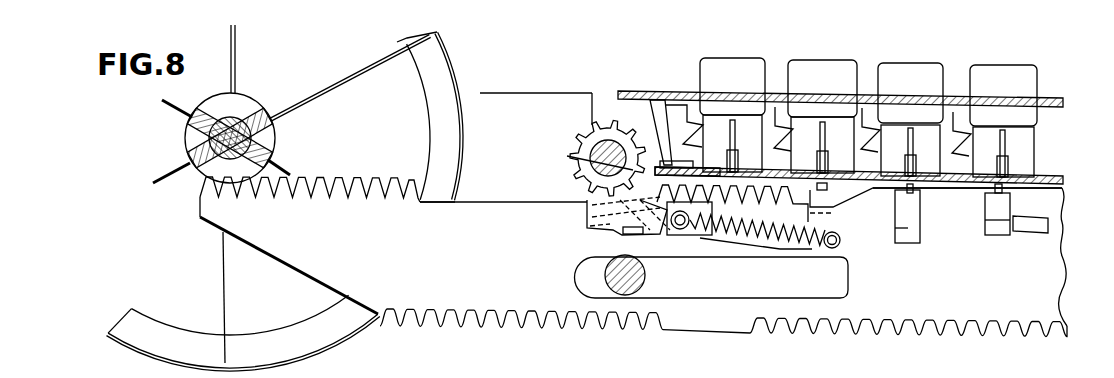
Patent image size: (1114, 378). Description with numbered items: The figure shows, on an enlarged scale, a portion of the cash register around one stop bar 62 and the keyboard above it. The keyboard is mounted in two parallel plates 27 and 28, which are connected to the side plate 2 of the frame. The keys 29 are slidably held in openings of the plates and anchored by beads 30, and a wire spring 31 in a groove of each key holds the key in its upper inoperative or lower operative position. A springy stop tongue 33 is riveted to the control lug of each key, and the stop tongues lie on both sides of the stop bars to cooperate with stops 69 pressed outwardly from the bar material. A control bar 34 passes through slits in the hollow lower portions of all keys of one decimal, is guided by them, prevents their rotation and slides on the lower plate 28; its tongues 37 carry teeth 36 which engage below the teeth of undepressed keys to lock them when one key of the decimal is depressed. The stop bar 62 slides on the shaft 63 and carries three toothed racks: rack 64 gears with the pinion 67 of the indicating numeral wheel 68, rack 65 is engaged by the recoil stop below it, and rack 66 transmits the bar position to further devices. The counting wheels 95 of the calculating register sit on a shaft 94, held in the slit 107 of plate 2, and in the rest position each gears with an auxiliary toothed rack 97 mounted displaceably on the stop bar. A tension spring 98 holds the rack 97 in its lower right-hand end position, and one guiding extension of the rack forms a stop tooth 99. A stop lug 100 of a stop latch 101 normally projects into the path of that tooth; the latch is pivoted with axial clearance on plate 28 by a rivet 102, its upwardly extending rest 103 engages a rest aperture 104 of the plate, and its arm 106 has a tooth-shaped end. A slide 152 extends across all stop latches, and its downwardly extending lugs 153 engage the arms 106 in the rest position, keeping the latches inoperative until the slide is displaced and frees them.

The side plate 2 is at (496, 107).
The upper keyboard plate 27 is at (1050, 99).
The lower keyboard plate 28 is at (1050, 179).
The key 29 is at (802, 72).
The bead 30 is at (967, 185).
The wire spring 31 is at (1003, 140).
The stop tongue 33 is at (900, 243).
The control bar 34 is at (684, 106).
The tooth 36 is at (968, 118).
The tongue 37 is at (954, 112).
The stop bar 62 is at (1048, 294).
The shaft 63 is at (645, 277).
The toothed rack 64 is at (352, 186).
The toothed rack 65 is at (443, 318).
The toothed rack 66 is at (957, 333).
The pinion 67 is at (190, 150).
The indicating numeral wheel 68 is at (290, 342).
The stop 69 is at (1030, 234).
The shaft 94 is at (586, 138).
The counting wheel 95 is at (590, 168).
The auxiliary toothed rack 97 is at (590, 233).
The tension spring 98 is at (797, 245).
The stop tooth 99 is at (612, 234).
The stop lug 100 is at (590, 213).
The stop latch 101 is at (714, 206).
The rivet 102 is at (780, 246).
The rest 103 is at (670, 162).
The rest aperture 104 is at (657, 167).
The arm 106 is at (590, 223).
The slit 107 is at (595, 103).
The slide 152 is at (700, 140).
The lug 153 is at (581, 155).